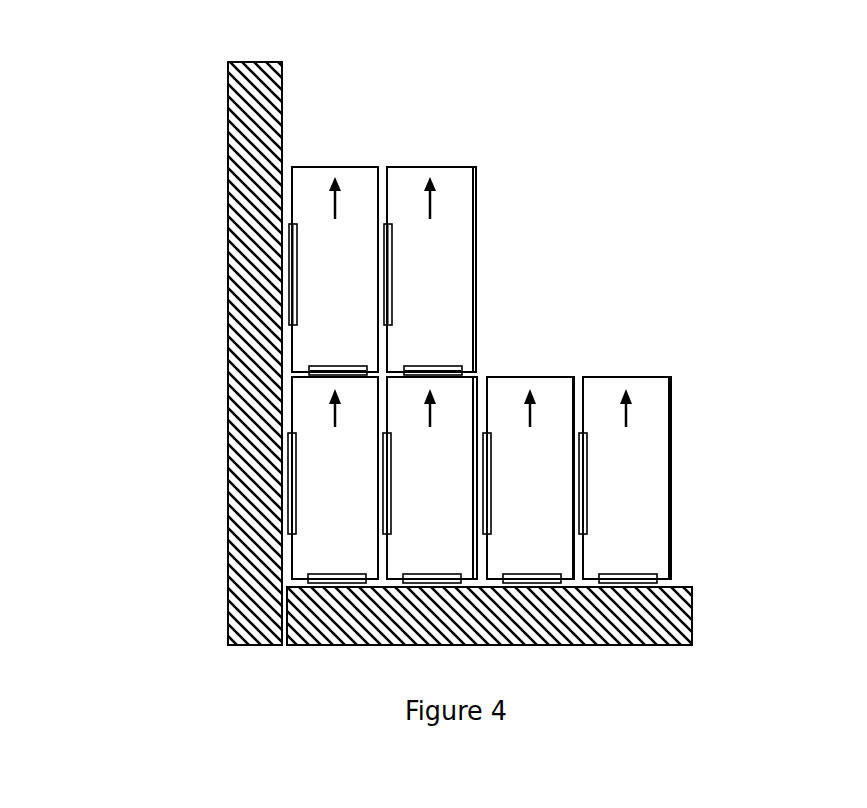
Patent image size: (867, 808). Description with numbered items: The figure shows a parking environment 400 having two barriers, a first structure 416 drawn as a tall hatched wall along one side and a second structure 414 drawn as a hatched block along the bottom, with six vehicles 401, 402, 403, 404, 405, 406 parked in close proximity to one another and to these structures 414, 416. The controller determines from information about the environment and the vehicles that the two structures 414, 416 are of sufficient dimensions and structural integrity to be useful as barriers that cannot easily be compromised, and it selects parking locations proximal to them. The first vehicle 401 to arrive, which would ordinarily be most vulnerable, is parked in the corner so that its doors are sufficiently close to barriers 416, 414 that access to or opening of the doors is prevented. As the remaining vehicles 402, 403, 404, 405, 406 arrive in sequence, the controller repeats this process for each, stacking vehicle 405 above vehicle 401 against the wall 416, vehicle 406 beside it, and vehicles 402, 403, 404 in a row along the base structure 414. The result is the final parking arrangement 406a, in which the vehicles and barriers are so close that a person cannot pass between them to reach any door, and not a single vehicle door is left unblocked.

The parking environment 400 is at (134, 70).
The first vehicle 401 is at (345, 552).
The vehicle 402 is at (450, 552).
The vehicle 403 is at (548, 552).
The vehicle 404 is at (640, 555).
The vehicle 405 is at (353, 180).
The vehicle 406 is at (458, 180).
The parking arrangement 406a is at (663, 172).
The structure 414 is at (312, 640).
The structure 416 is at (236, 218).